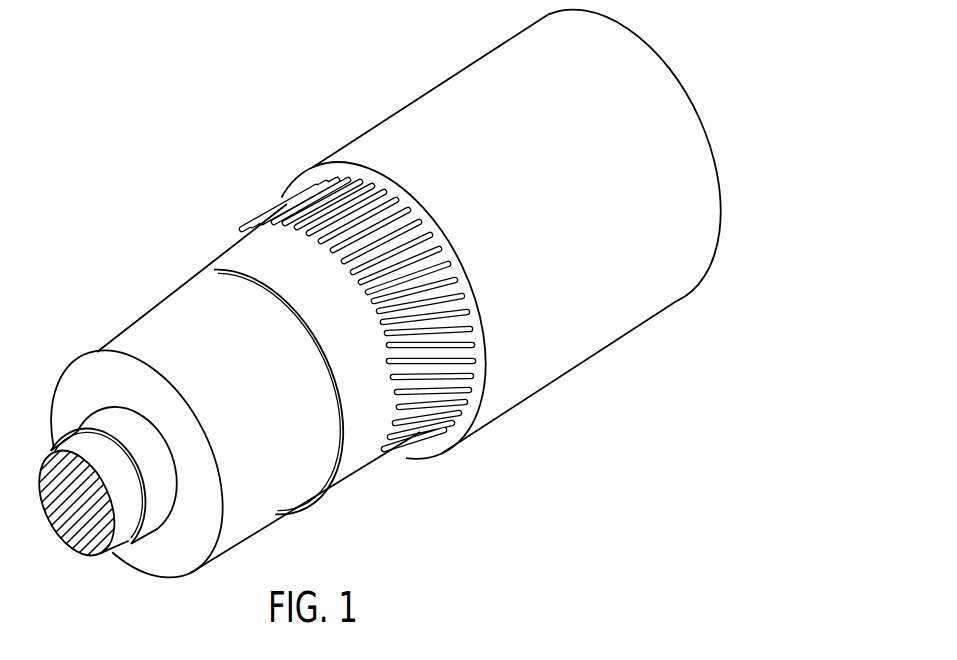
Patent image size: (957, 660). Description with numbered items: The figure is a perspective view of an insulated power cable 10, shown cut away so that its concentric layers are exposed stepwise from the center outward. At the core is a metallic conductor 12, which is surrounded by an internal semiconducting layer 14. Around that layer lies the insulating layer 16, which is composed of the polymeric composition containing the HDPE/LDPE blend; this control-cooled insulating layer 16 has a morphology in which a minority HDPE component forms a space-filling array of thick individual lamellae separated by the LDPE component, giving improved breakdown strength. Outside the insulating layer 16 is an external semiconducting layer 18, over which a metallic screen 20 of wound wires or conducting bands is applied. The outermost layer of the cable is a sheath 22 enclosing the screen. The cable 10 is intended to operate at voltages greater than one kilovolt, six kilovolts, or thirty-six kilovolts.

The insulated power cable 10 is at (360, 332).
The metallic conductor 12 is at (127, 526).
The internal semiconducting layer 14 is at (162, 508).
The insulating layer 16 is at (75, 384).
The external semiconducting layer 18 is at (233, 258).
The metallic screen 20 is at (420, 428).
The sheath 22 is at (556, 352).